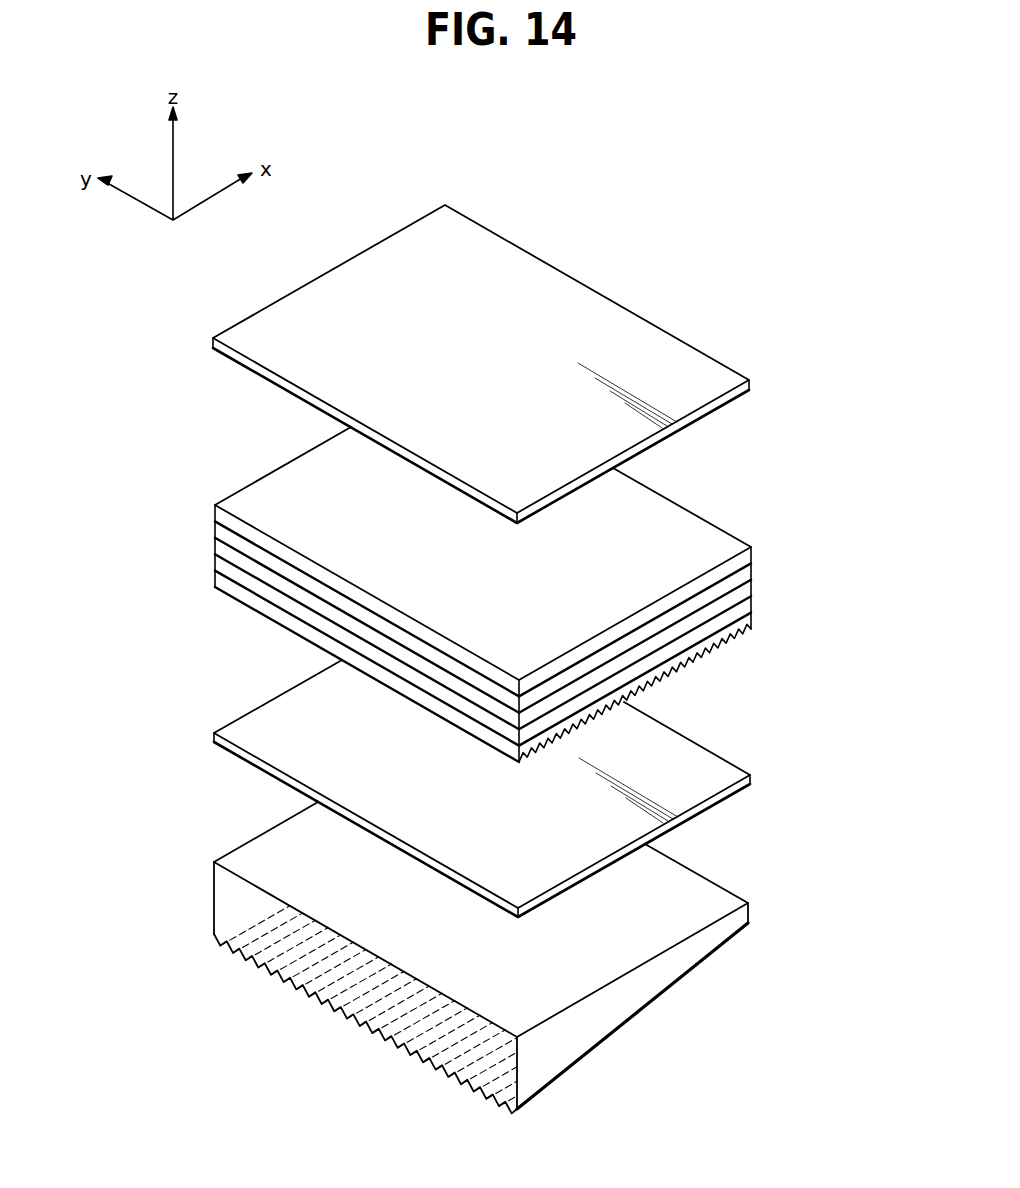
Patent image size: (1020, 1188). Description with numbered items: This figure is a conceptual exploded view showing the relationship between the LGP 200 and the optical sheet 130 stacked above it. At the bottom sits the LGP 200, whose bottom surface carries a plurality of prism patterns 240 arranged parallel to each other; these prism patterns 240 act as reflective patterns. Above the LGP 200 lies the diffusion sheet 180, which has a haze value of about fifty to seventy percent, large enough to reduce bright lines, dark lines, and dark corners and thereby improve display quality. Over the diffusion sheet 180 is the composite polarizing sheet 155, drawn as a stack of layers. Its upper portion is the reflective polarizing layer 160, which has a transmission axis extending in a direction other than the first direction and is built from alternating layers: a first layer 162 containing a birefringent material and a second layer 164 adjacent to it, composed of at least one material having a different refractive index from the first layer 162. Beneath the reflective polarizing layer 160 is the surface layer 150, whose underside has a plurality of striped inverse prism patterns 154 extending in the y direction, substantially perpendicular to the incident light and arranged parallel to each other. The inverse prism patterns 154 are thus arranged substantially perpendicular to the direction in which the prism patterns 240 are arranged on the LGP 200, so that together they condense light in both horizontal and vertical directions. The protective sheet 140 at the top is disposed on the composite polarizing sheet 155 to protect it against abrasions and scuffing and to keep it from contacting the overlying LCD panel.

The optical sheet 130 is at (525, 561).
The protective sheet 140 is at (718, 374).
The composite polarizing sheet 155 is at (496, 594).
The reflective polarizing layer 160 is at (468, 623).
The first layer 162 is at (221, 566).
The second layer 164 is at (216, 576).
The surface layer 150 is at (661, 682).
The inverse prism patterns 154 is at (730, 645).
The diffusion sheet 180 is at (535, 788).
The LGP 200 is at (515, 957).
The prism patterns 240 is at (490, 1071).